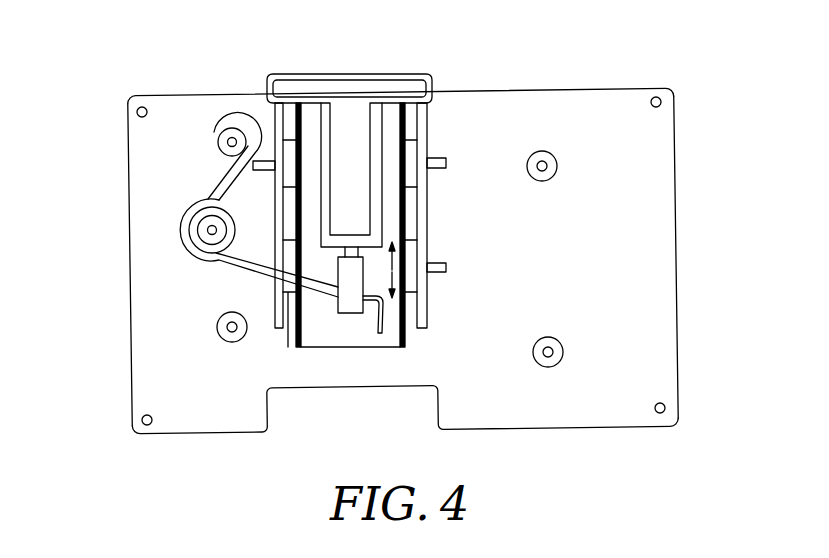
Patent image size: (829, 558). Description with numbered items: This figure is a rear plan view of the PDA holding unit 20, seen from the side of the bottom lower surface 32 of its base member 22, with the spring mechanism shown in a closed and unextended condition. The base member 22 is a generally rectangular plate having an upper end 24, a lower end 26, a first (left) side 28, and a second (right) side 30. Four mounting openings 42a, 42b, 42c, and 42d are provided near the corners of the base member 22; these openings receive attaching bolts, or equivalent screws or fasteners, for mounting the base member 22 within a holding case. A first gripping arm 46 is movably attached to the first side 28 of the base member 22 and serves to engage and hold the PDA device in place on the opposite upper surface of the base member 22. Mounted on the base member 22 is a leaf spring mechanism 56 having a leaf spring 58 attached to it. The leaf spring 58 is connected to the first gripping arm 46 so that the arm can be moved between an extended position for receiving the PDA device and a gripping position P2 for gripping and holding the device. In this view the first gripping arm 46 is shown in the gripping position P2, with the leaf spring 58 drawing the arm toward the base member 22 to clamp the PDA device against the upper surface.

The PDA holding unit 20 is at (586, 112).
The base member 22 is at (493, 113).
The upper end 24 is at (129, 275).
The lower end 26 is at (678, 305).
The first (left) side 28 is at (215, 94).
The second (right) side 30 is at (523, 428).
The bottom lower surface 32 is at (585, 233).
The mounting opening 42a is at (137, 105).
The mounting opening 42b is at (141, 425).
The mounting opening 42c is at (671, 404).
The mounting opening 42d is at (660, 96).
The first gripping arm 46 is at (298, 86).
The leaf spring mechanism 56 is at (220, 267).
The leaf spring 58 is at (215, 190).
The gripping position P2 is at (405, 75).